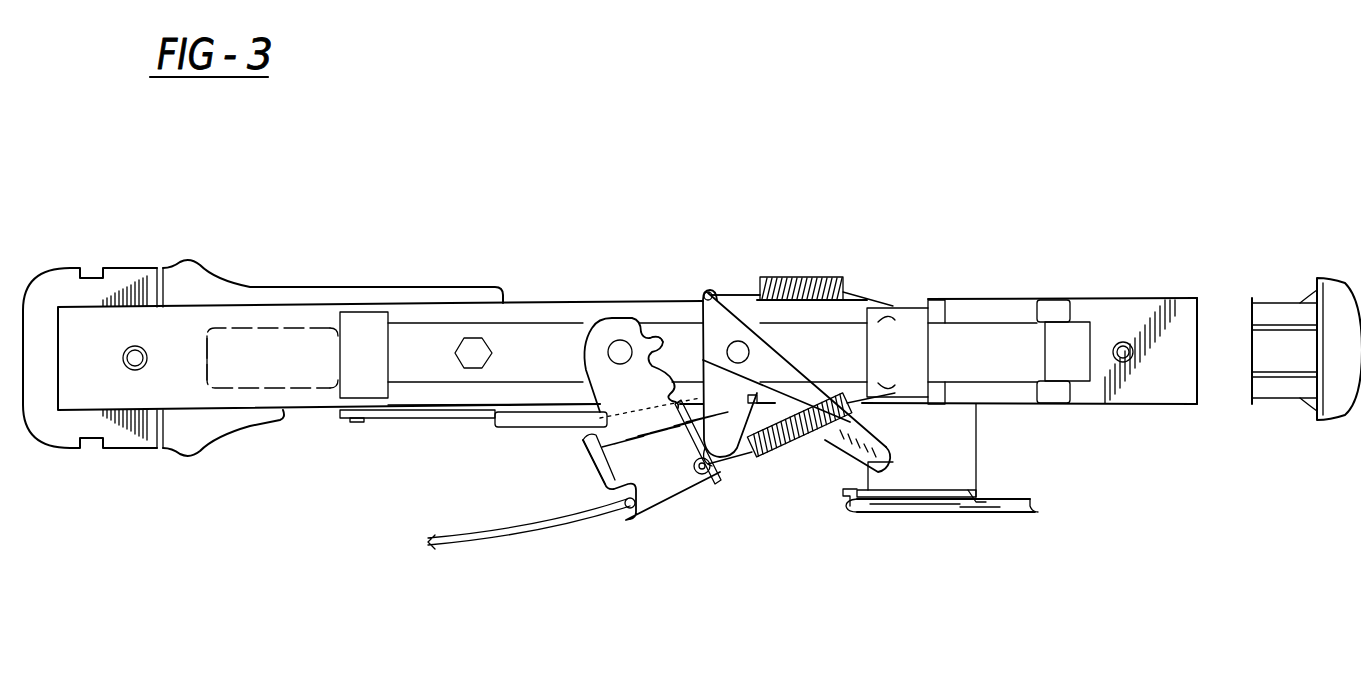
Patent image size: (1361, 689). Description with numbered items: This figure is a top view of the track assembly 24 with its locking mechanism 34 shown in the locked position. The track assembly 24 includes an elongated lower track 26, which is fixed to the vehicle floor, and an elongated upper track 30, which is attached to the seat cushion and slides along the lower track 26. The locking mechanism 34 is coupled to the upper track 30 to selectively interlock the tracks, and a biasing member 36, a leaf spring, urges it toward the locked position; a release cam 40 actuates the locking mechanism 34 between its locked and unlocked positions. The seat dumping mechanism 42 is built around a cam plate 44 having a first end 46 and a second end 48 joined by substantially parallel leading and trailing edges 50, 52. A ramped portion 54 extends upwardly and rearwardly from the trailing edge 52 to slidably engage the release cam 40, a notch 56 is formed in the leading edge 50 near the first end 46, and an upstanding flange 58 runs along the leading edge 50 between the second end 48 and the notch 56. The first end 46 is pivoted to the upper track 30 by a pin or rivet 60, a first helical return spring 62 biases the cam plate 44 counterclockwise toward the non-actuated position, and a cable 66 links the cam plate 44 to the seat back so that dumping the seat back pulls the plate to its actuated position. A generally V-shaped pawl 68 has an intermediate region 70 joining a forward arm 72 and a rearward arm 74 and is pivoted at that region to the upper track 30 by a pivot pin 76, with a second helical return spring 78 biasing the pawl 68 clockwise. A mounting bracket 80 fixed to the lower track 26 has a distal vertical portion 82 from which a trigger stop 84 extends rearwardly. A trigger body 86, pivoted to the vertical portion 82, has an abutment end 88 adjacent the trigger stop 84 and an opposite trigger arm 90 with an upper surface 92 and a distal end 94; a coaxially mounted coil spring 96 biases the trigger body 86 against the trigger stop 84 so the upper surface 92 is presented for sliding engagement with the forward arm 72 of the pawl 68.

The track assembly 24 is at (965, 215).
The lower track 26 is at (1282, 300).
The upper track 30 is at (1210, 298).
The locking mechanism 34 is at (503, 438).
The biasing member 36 is at (388, 420).
The release cam 40 is at (528, 430).
The seat dumping mechanism 42 is at (757, 258).
The cam plate 44 is at (607, 296).
The first end 46 is at (627, 499).
The second end 48 is at (633, 318).
The leading edge 50 is at (723, 470).
The trailing edge 52 is at (604, 495).
The ramped portion 54 is at (583, 462).
The notch 56 is at (665, 294).
The upstanding flange 58 is at (725, 455).
The pin or rivet 60 is at (613, 346).
The first helical return spring 62 is at (800, 447).
The cable 66 is at (492, 540).
The pawl 68 is at (805, 375).
The intermediate region 70 is at (735, 315).
The forward arm 72 is at (893, 455).
The rearward arm 74 is at (705, 485).
The pivot pin 76 is at (762, 290).
The second helical return spring 78 is at (828, 278).
The mounting bracket 80 is at (967, 458).
The distal vertical portion 82 is at (970, 488).
The trigger stop 84 is at (842, 500).
The trigger body 86 is at (940, 515).
The abutment end 88 is at (860, 512).
The trigger arm 90 is at (1020, 515).
The upper surface 92 is at (992, 515).
The distal end 94 is at (1035, 512).
The coil spring 96 is at (977, 505).